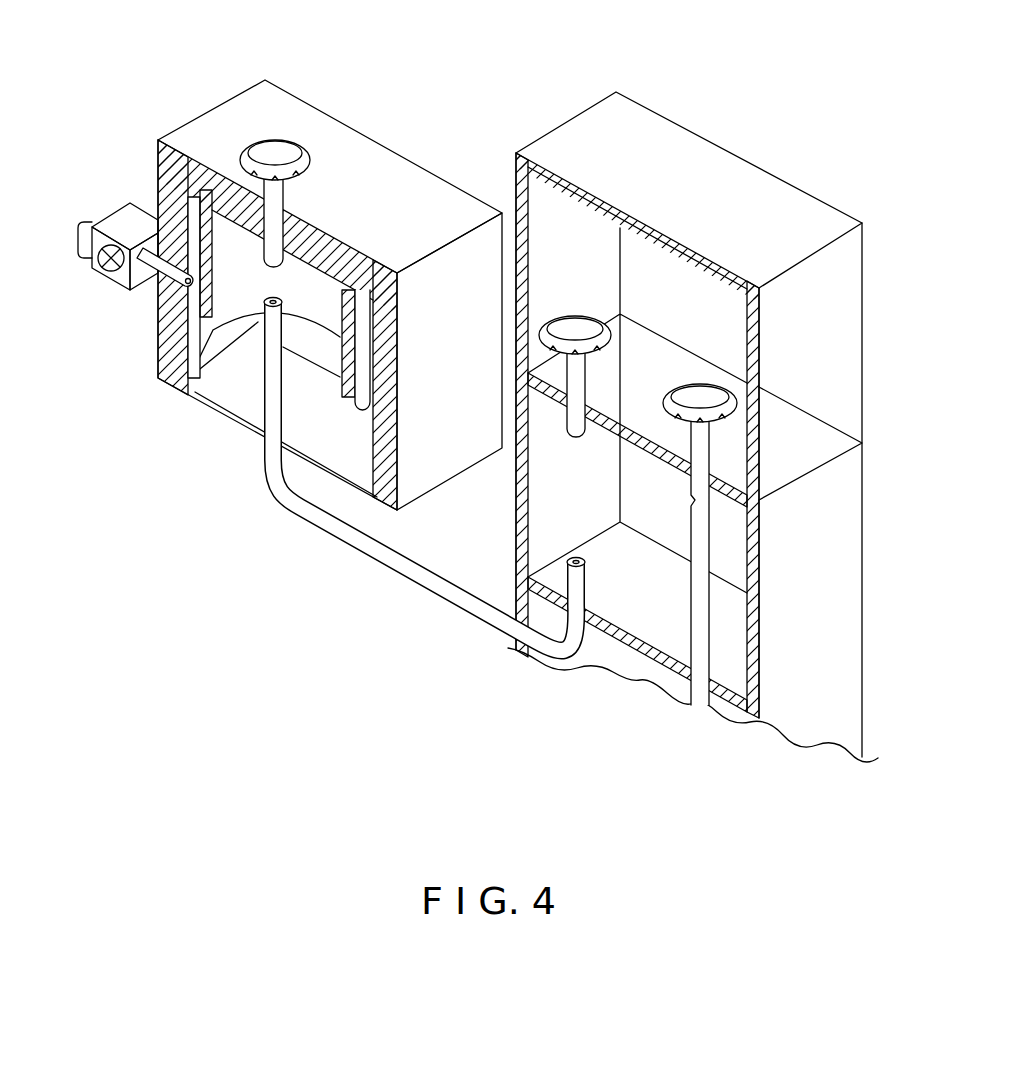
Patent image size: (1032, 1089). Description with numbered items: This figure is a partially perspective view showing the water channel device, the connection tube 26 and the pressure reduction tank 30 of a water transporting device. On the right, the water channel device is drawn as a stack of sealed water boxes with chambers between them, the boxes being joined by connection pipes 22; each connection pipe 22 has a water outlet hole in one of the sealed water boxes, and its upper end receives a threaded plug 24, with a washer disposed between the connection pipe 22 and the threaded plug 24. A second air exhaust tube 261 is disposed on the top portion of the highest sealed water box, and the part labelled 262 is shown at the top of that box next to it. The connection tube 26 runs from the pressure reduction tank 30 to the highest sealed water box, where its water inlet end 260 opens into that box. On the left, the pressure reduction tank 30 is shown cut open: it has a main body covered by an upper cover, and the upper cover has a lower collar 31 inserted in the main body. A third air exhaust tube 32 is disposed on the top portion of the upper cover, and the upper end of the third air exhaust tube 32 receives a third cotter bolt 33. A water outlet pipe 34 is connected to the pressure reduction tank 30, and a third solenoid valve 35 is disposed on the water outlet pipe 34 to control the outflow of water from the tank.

The connection pipe 22 is at (703, 622).
The threaded plug 24 is at (707, 397).
The connection tube 26 is at (457, 597).
The water inlet end 260 is at (575, 553).
The second air exhaust tube 261 is at (578, 393).
The valve knob 262 is at (578, 320).
The pressure reduction tank 30 is at (430, 144).
The lower collar 31 is at (202, 323).
The third air exhaust tube 32 is at (277, 207).
The third cotter bolt 33 is at (280, 148).
The water outlet pipe 34 is at (160, 272).
The third solenoid valve 35 is at (122, 218).